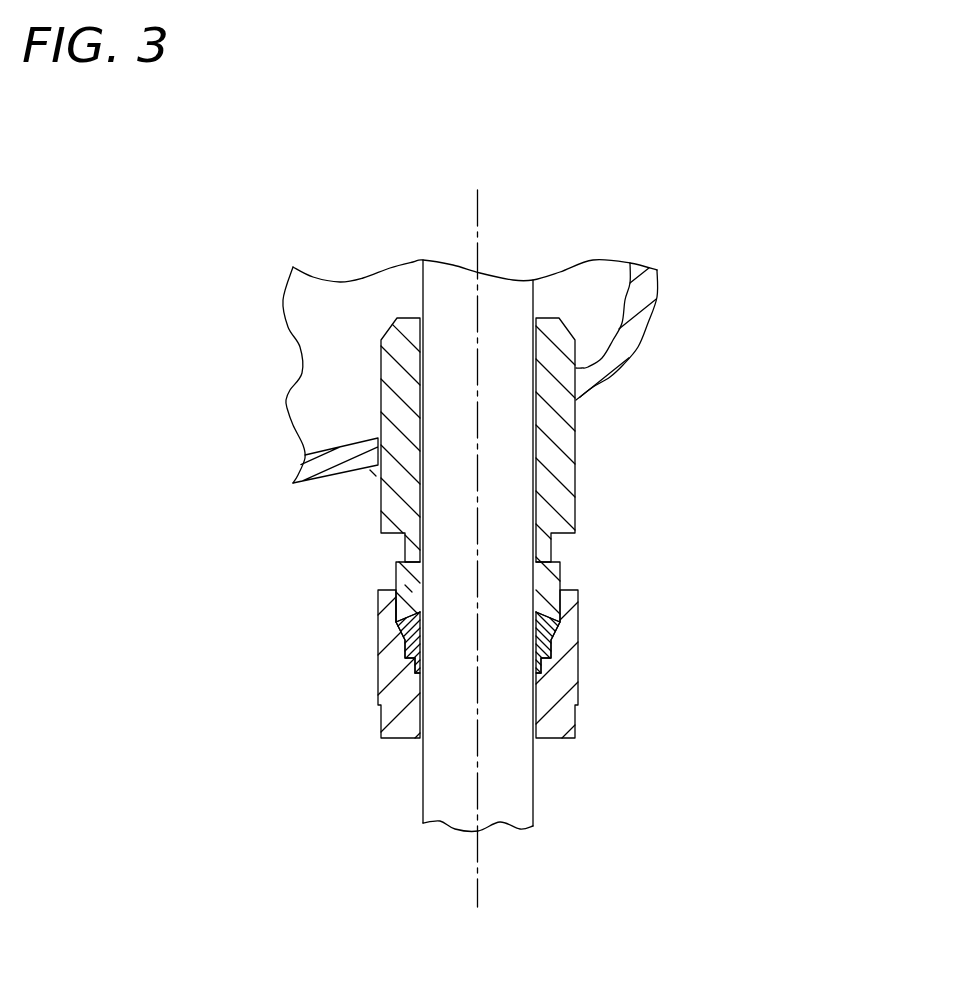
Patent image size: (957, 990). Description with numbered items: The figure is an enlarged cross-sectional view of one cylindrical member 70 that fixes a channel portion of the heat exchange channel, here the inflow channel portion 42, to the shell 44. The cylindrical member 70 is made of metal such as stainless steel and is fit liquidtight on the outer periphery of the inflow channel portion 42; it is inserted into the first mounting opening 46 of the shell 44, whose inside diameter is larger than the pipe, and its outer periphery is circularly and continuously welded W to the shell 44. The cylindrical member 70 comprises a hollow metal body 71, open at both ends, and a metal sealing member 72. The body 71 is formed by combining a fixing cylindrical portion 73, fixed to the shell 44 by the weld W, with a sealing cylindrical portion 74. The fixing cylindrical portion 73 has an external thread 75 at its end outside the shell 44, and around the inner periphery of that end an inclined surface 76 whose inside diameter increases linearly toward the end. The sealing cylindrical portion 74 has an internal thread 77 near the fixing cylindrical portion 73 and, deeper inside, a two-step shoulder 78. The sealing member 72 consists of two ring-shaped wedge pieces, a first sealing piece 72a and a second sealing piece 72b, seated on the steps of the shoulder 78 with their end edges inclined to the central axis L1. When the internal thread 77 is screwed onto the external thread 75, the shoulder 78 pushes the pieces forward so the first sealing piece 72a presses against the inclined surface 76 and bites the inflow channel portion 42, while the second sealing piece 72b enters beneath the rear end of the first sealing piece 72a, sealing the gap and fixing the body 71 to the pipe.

The inflow channel portion 42 is at (447, 783).
The shell 44 is at (663, 353).
The first mounting opening 46 is at (378, 442).
The weld W is at (375, 467).
The cylindrical member 70 is at (545, 528).
The body 71 is at (561, 470).
The sealing member 72 is at (560, 664).
The first wedge-shaped sealing piece 72a is at (547, 650).
The second wedge-shaped sealing piece 72b is at (540, 670).
The fixing cylindrical portion 73 is at (557, 487).
The sealing cylindrical portion 74 is at (540, 587).
The external thread 75 is at (413, 602).
The inclined surface 76 is at (397, 622).
The internal thread 77 is at (393, 610).
The shoulder 78 is at (408, 665).
The central axis L1 is at (477, 574).